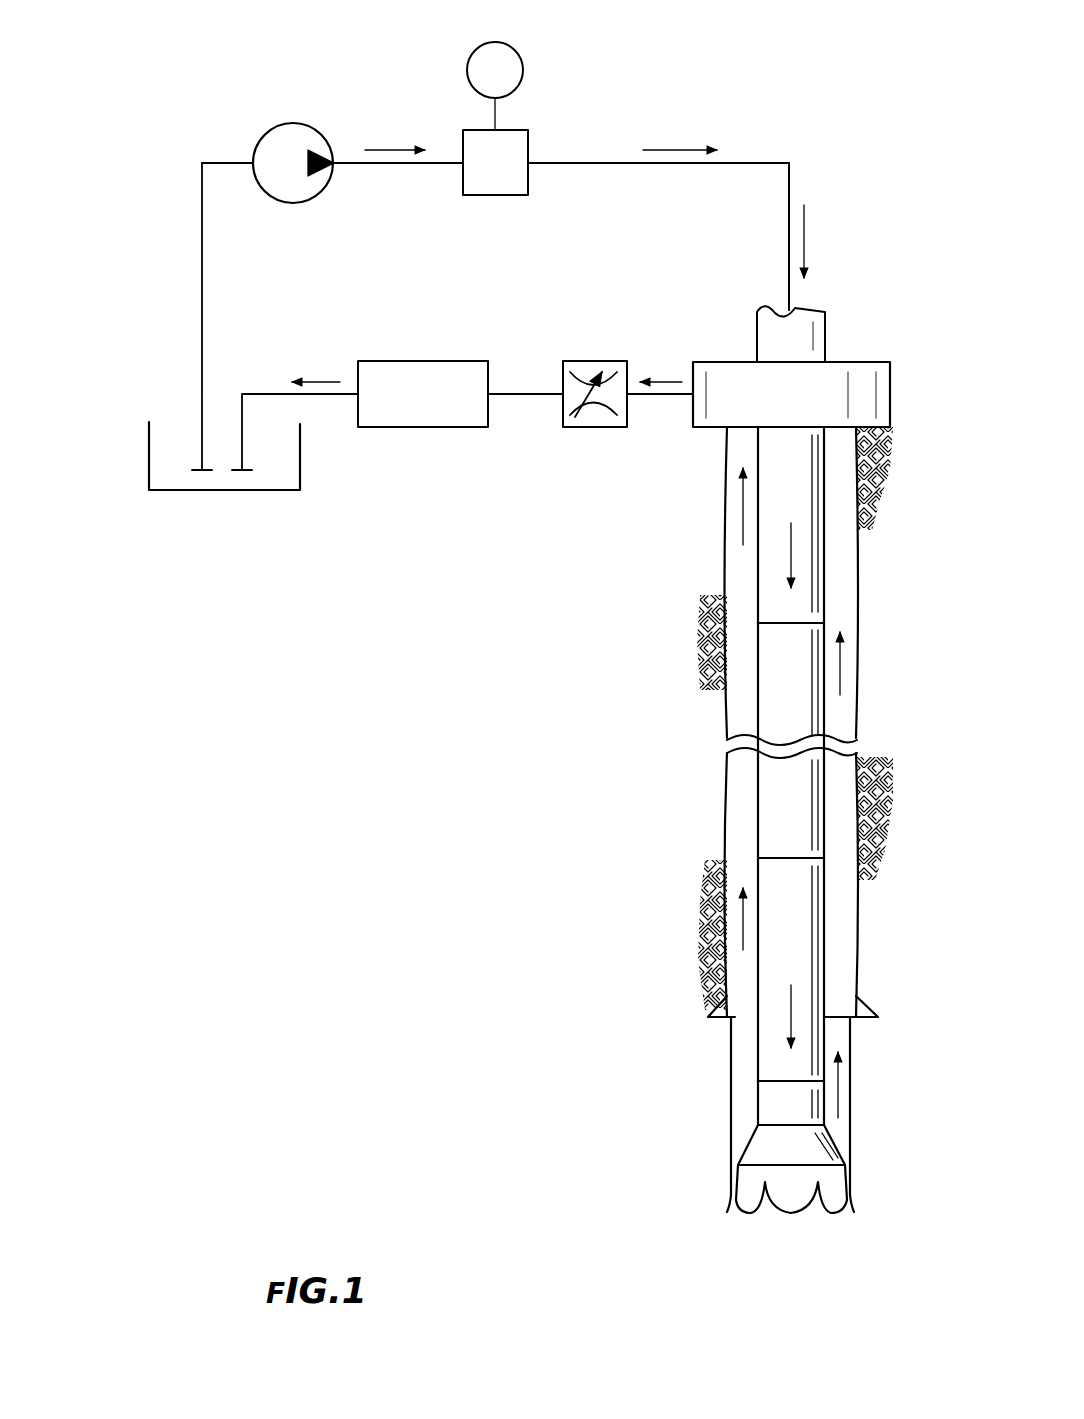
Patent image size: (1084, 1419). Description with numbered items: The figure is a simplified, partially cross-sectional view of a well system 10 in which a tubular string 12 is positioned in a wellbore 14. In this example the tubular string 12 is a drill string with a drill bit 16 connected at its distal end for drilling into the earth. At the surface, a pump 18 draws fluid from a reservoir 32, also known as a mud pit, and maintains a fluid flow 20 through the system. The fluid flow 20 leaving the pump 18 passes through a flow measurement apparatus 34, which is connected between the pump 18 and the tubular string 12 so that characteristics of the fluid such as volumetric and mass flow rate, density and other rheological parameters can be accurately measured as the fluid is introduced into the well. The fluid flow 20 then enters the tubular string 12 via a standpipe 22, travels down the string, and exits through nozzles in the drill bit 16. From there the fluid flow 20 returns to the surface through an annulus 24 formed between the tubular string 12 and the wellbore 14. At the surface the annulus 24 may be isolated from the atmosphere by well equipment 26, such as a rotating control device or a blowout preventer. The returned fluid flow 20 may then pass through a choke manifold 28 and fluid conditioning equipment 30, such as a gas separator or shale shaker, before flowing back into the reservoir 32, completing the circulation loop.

The drilling fluid circulation system 10 is at (640, 80).
The tubular string 12 is at (825, 565).
The wellbore 14 is at (727, 830).
The drill bit 16 is at (748, 1142).
The pump 18 is at (290, 123).
The fluid flow 20 is at (388, 150).
The standpipe 22 is at (789, 209).
The annulus 24 is at (737, 568).
The well equipment 26 is at (893, 392).
The choke manifold 28 is at (584, 360).
The fluid conditioning equipment 30 is at (433, 360).
The reservoir 32 is at (148, 452).
The flow measurement apparatus 34 is at (510, 45).